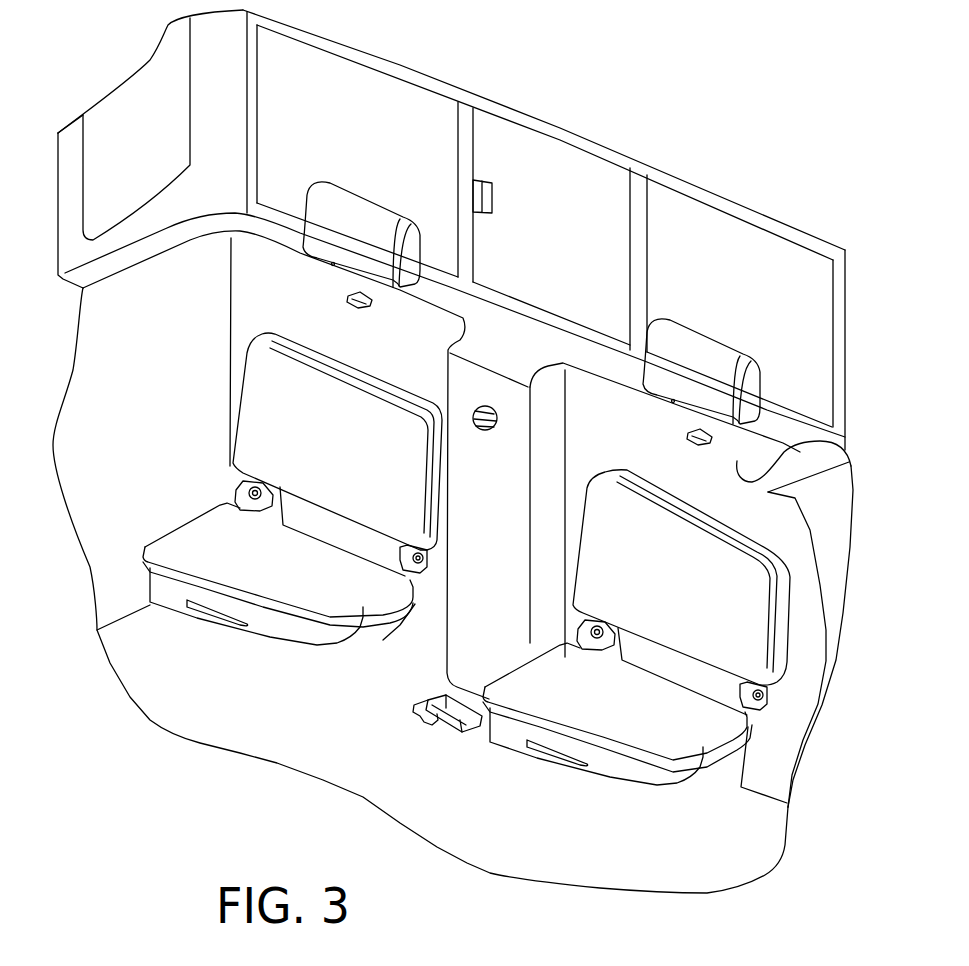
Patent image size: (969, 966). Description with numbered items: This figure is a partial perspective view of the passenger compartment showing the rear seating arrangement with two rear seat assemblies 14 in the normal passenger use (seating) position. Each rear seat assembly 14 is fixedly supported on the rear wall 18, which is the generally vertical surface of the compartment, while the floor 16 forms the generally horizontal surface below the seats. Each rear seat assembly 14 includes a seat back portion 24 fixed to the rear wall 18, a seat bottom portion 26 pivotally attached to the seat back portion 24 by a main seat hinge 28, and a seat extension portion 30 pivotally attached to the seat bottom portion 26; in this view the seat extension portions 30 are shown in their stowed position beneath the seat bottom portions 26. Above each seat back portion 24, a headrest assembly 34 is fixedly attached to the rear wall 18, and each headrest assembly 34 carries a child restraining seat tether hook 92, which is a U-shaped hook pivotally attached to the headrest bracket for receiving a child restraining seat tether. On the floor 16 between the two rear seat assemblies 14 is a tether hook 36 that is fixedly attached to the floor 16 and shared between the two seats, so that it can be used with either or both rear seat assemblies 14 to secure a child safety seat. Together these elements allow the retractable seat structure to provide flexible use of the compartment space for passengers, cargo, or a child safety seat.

The rear seat assembly 14 is at (182, 512).
The floor 16 is at (193, 700).
The rear wall 18 is at (833, 437).
The seat back portion 24 is at (325, 400).
The seat bottom portion 26 is at (362, 622).
The main seat hinge 28 is at (425, 600).
The seat extension portion 30 is at (303, 653).
The headrest assembly 34 is at (345, 218).
The tether hook 36 is at (438, 748).
The child restraining seat tether hook 92 is at (355, 308).